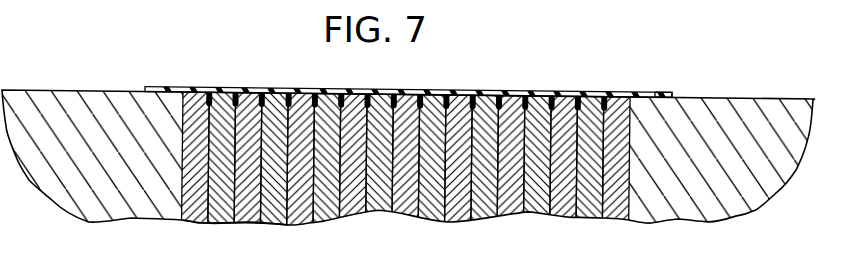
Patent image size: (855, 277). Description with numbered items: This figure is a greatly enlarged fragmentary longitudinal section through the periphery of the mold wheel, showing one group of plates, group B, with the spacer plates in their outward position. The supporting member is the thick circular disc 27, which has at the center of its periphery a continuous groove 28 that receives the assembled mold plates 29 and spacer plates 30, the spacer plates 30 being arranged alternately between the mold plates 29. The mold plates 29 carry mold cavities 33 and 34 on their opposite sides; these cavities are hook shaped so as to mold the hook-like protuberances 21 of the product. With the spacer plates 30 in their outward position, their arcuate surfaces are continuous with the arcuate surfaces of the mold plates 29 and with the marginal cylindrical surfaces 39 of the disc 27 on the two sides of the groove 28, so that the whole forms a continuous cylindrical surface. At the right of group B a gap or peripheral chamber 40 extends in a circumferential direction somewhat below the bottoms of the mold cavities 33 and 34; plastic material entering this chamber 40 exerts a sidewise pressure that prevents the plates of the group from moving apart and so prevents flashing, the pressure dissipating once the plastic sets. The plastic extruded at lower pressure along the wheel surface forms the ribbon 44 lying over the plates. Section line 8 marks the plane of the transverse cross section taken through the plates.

The circular disc 27 is at (62, 80).
The cylindrical surfaces of disc 39 is at (110, 89).
The ribbon 44 is at (152, 85).
The peripheral chamber 40 is at (643, 95).
The hook-like protuberances 21 is at (210, 107).
The mold plates 29 is at (267, 107).
The groove 28 is at (186, 208).
The mold cavity 33 is at (313, 100).
The mold cavity 34 is at (340, 107).
The spacer plates 30 is at (242, 220).
The section line 8- 8 is at (472, 243).
The group B of mold and spacer plates B is at (277, 228).